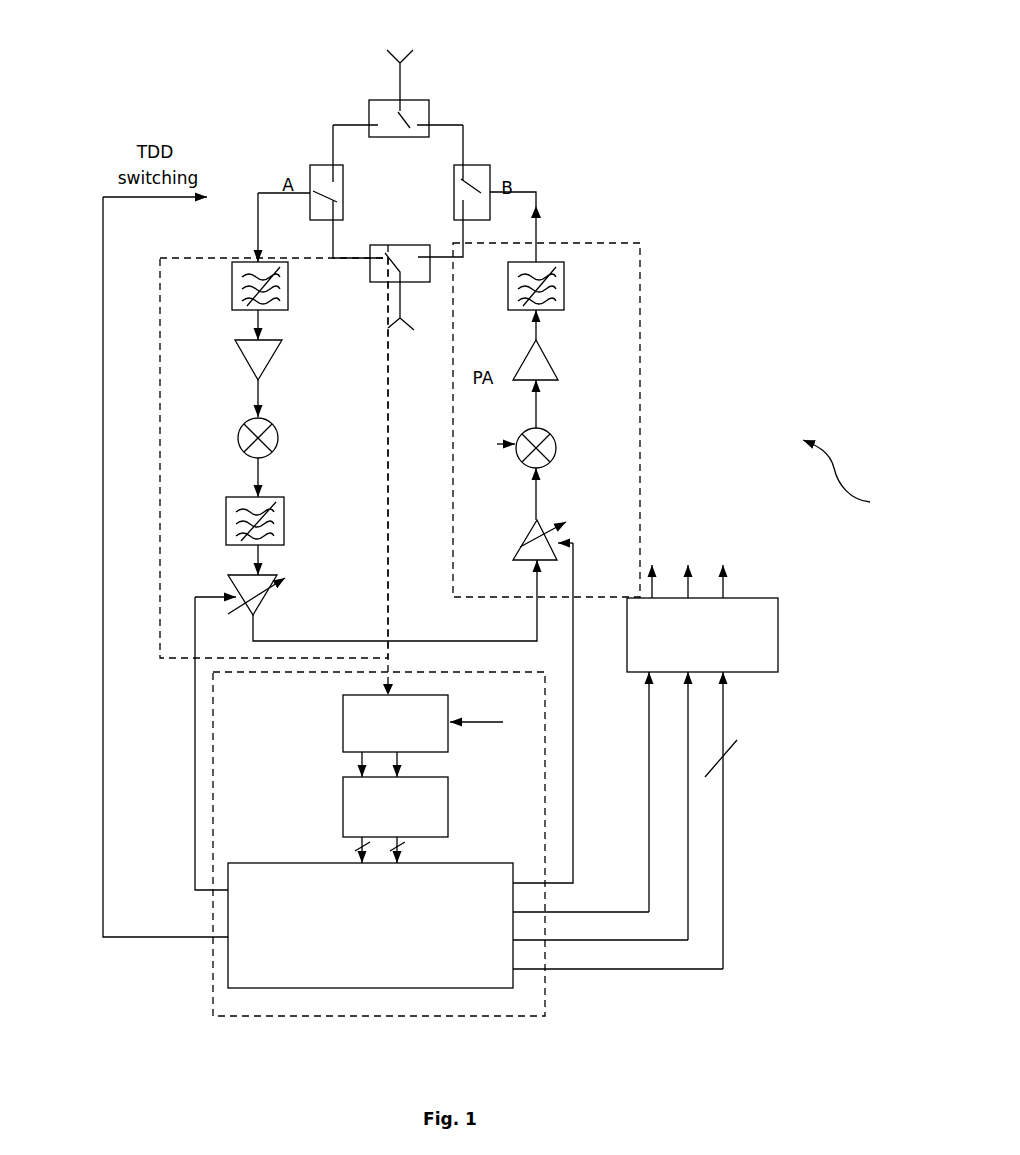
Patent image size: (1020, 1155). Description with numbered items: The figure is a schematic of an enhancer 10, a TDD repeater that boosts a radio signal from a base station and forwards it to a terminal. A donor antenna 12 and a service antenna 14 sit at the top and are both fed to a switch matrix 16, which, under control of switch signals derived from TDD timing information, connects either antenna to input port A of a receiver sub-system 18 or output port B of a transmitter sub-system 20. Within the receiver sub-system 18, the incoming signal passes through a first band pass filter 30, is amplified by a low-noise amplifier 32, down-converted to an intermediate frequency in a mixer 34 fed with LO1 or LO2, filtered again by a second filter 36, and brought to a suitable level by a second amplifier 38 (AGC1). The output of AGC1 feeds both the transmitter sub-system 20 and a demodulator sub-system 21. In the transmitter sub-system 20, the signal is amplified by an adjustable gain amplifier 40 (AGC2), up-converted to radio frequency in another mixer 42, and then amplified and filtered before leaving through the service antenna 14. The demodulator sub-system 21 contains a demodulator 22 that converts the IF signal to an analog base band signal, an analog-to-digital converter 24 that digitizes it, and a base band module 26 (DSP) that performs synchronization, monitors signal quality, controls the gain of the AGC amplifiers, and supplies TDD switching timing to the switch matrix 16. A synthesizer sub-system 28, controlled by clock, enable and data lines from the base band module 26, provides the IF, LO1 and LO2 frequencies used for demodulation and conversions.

The enhancer 10 is at (859, 481).
The donor antenna 12 is at (387, 72).
The service antenna 14 is at (382, 320).
The switch matrix 16 is at (458, 122).
The receiver sub-system 18 is at (122, 376).
The transmitter sub-system 20 is at (640, 355).
The demodulator sub-system 21 is at (220, 793).
The demodulator 22 is at (337, 722).
The analog-to-digital converter 24 is at (333, 808).
The base band module 26 is at (297, 975).
The synthesizer sub-system 28 is at (797, 632).
The first band pass filter 30 is at (225, 290).
The low-noise amplifier 32 is at (233, 350).
The mixer 34 is at (236, 438).
The second filter 36 is at (220, 513).
The second amplifier 38 is at (222, 578).
The adjustable gain amplifier 40 is at (556, 540).
The mixer 42 is at (558, 428).